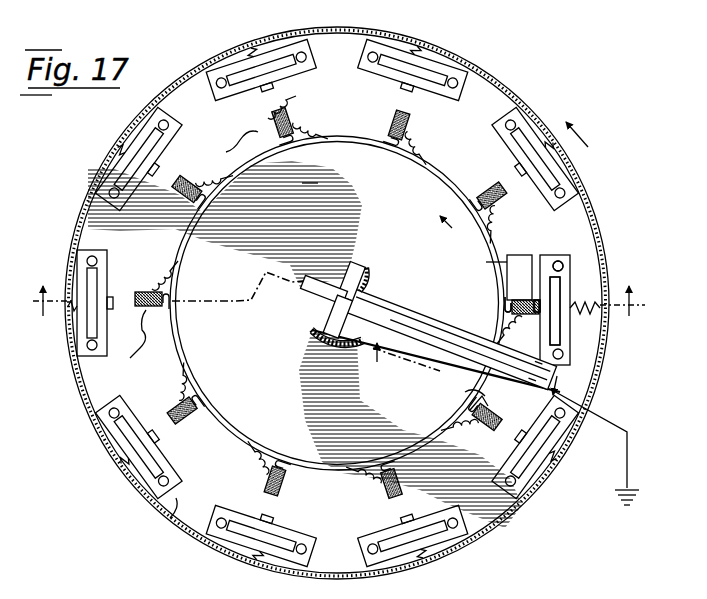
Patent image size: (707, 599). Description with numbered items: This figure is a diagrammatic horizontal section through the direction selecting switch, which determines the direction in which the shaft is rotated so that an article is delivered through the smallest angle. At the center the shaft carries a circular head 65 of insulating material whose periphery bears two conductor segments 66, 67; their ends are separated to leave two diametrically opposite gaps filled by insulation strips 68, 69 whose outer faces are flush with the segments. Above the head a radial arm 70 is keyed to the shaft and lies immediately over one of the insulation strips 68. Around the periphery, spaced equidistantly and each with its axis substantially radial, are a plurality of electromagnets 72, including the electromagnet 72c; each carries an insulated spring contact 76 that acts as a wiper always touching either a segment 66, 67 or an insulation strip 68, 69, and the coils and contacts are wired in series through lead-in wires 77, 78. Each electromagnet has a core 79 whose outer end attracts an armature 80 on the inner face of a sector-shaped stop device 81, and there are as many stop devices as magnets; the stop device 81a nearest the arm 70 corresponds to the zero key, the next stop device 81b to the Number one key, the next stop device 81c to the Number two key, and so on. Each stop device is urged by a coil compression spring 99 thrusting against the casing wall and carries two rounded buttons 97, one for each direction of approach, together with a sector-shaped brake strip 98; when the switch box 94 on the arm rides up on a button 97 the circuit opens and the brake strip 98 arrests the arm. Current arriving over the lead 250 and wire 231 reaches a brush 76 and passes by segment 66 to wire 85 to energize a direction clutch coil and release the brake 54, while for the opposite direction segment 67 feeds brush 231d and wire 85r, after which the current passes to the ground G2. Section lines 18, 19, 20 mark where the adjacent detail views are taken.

The brake 54 is at (541, 99).
The circular head 65 is at (305, 344).
The conductor segment 66 is at (302, 183).
The conductor segment 67 is at (182, 360).
The insulation strip 68 is at (465, 392).
The insulation strip 69 is at (178, 252).
The radial arm 70 is at (418, 318).
The electromagnet 72 is at (296, 120).
The electromagnet 72c is at (480, 426).
The spring contact 76 is at (284, 150).
The lead-in wire 77 is at (270, 116).
The lead-in wire 78 is at (475, 168).
The core 79 is at (319, 357).
The armature 80 is at (519, 190).
The stop device 81 is at (520, 496).
The stop device 81a is at (568, 288).
The stop device 81b is at (560, 182).
The stop device 81c is at (470, 63).
The wire 85 is at (360, 282).
The wire 85r is at (405, 372).
The switch box 94 is at (170, 518).
The button 97 is at (310, 60).
The brake strip 98 is at (264, 58).
The coil compression spring 99 is at (566, 160).
The wire 231 is at (482, 264).
The brush 231d is at (470, 410).
The lead 250 is at (240, 124).
The section line 18 is at (342, 311).
The section line 19 is at (519, 186).
The section line 20 is at (472, 378).
The ground G2 is at (636, 490).